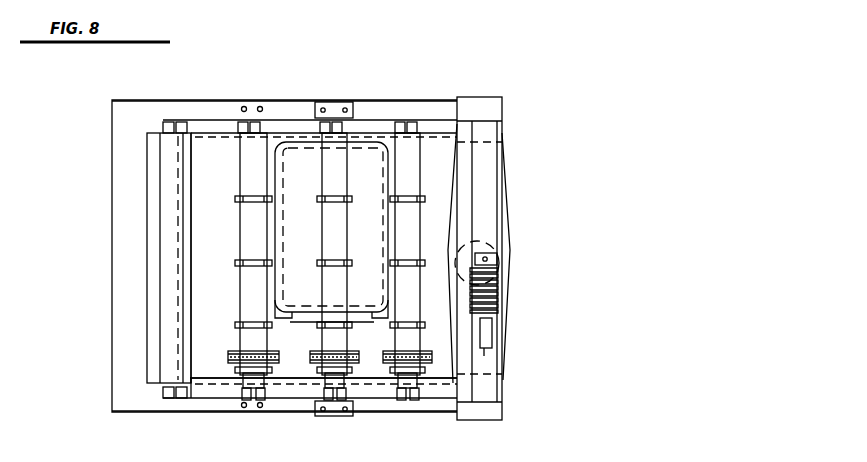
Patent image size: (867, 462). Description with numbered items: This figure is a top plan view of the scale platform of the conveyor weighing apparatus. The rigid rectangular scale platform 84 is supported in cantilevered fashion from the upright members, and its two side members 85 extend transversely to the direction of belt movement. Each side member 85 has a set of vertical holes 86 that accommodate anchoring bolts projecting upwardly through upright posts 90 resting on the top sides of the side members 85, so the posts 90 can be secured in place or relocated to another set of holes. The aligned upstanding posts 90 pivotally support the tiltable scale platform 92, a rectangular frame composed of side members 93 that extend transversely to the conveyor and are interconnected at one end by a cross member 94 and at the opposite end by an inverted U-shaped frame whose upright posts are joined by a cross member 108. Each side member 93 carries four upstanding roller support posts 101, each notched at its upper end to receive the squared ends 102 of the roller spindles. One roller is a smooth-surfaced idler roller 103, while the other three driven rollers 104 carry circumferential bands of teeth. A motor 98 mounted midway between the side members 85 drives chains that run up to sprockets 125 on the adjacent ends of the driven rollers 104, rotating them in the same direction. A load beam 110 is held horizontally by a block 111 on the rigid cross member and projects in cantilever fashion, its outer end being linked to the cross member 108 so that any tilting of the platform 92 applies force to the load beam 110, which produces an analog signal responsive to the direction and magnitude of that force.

The rigid rectangular scale platform 84 is at (400, 414).
The side members 85 is at (223, 100).
The vertical holes 86 is at (260, 106).
The upright posts 90 is at (335, 101).
The tiltable scale platform 92 is at (198, 117).
The side members 93 is at (202, 376).
The cross member 94 is at (165, 222).
The motor 98 is at (313, 236).
The roller support posts 101 is at (163, 121).
The squared ends 102 is at (405, 122).
The idler roller 103 is at (213, 165).
The driven rollers 104 is at (238, 178).
The cross member 108 is at (487, 203).
The load beam 110 is at (493, 283).
The block 111 is at (508, 340).
The sprockets 125 is at (279, 358).